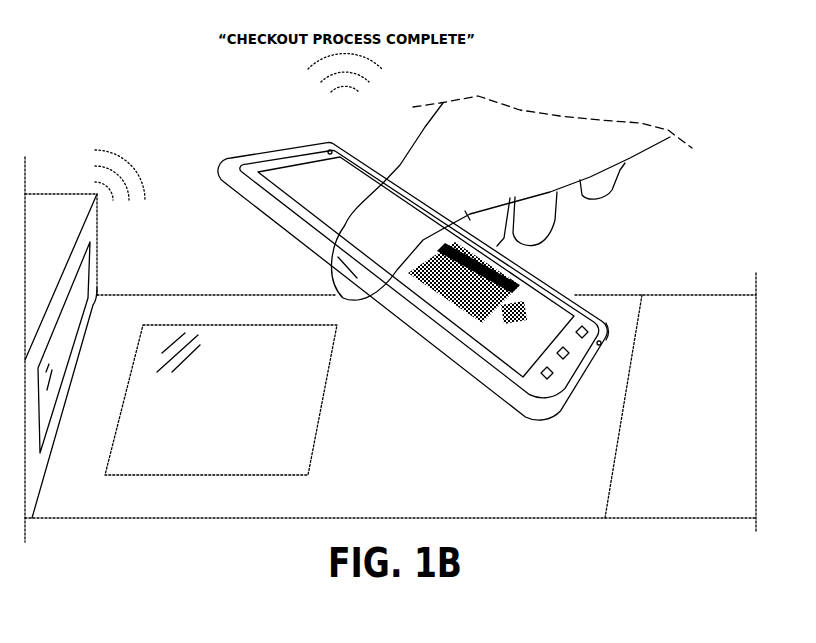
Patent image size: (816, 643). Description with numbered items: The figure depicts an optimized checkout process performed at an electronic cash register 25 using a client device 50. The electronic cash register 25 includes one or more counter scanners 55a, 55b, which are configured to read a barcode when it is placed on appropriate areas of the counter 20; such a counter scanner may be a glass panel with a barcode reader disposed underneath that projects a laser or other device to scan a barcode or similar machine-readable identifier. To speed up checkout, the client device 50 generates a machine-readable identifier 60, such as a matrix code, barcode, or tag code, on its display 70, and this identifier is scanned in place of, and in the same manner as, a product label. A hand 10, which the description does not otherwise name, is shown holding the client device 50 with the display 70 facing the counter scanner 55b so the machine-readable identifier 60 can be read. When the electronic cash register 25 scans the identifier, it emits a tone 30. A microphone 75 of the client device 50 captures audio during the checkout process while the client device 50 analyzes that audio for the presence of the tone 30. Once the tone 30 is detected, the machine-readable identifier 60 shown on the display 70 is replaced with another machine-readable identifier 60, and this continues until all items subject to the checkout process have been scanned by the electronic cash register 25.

The user hand 10 is at (648, 150).
The counter 20 is at (205, 293).
The electronic cash register 25 is at (98, 218).
The tone 30 is at (150, 162).
The client device 50 is at (283, 148).
The counter scanner 55a is at (97, 273).
The counter scanner 55b is at (262, 323).
The machine-readable identifier 60 is at (432, 304).
The display 70 is at (365, 152).
The microphone 75 is at (603, 347).